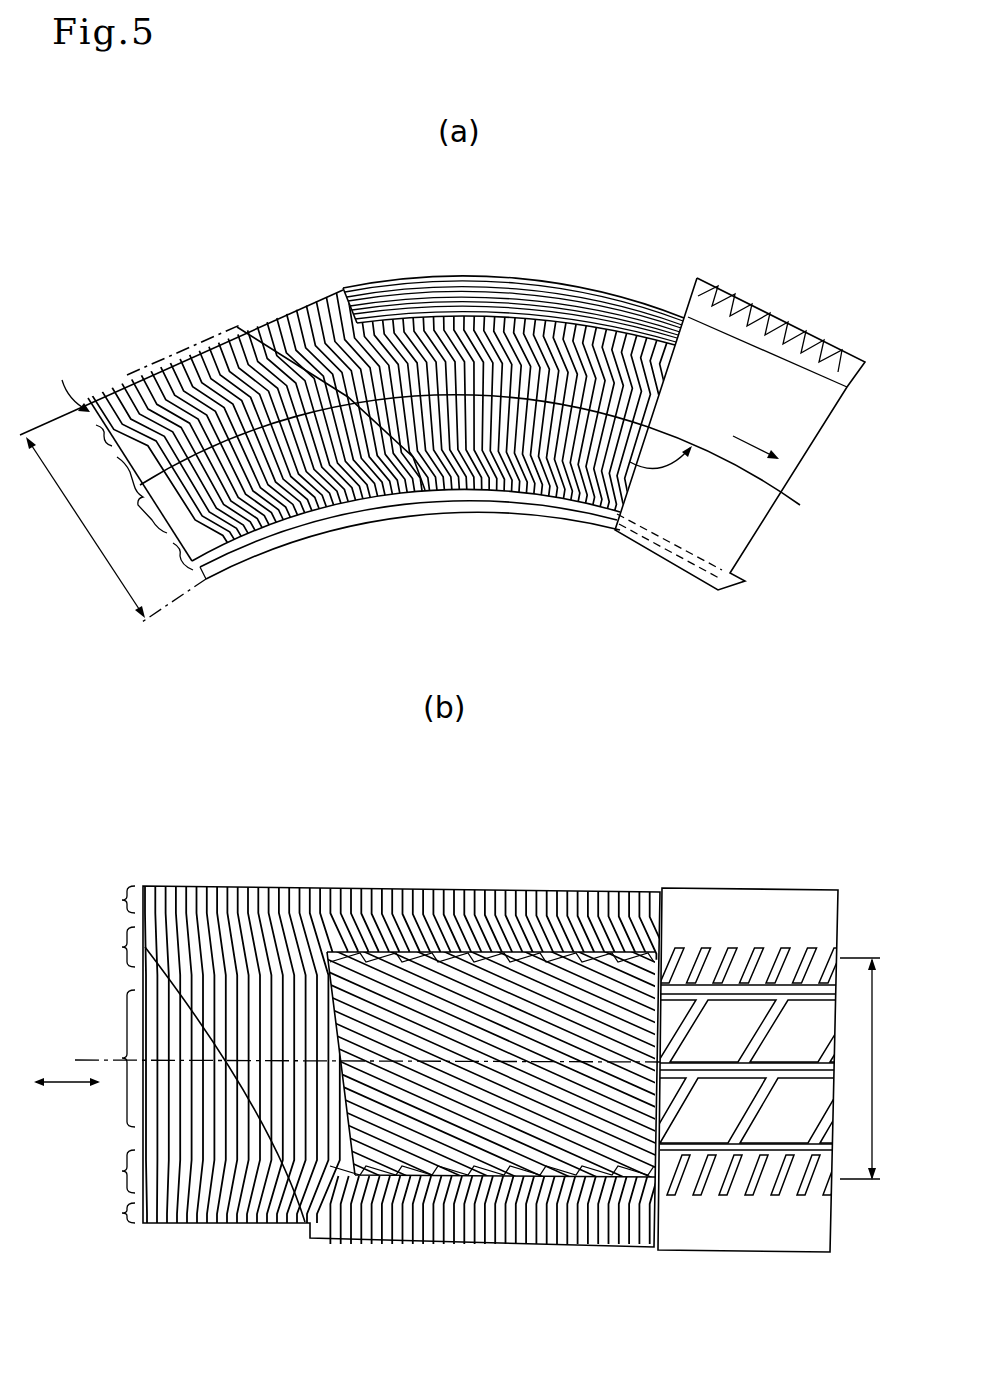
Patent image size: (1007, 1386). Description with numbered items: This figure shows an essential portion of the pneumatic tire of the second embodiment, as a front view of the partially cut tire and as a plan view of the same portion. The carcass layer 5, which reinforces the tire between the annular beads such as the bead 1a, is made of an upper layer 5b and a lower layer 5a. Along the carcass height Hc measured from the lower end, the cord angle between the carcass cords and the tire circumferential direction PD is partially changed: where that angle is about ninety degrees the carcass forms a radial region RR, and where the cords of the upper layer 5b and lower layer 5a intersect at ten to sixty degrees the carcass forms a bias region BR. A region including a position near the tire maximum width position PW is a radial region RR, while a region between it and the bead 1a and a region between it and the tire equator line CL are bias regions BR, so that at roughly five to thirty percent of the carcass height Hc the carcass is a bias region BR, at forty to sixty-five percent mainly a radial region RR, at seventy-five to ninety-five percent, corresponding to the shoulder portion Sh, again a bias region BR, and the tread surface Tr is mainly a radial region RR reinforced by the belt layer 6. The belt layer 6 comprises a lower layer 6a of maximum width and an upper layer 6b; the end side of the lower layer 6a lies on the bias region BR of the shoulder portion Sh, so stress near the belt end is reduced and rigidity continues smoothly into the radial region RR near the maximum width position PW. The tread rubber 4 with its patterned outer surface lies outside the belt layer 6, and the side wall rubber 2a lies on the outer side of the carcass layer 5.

The carcass layer 5 is at (255, 243).
The lower layer 5a is at (185, 352).
The upper layer 5b is at (250, 317).
The belt layer 6 is at (575, 283).
The lower layer of belt layers 6a is at (375, 945).
The upper belt layer 6b is at (457, 968).
The tread rubber 4 is at (792, 310).
The bead 1a is at (212, 572).
The side wall rubber 2a is at (770, 888).
The radial region RR is at (103, 792).
The bias region BR is at (119, 806).
The carcass height Hc is at (85, 527).
The tire circumferential direction PD is at (410, 762).
The tire maximum width position PW is at (496, 466).
The tire equator line CL is at (343, 1059).
The tread surface Tr is at (874, 1069).
The shoulder portion Sh is at (603, 937).